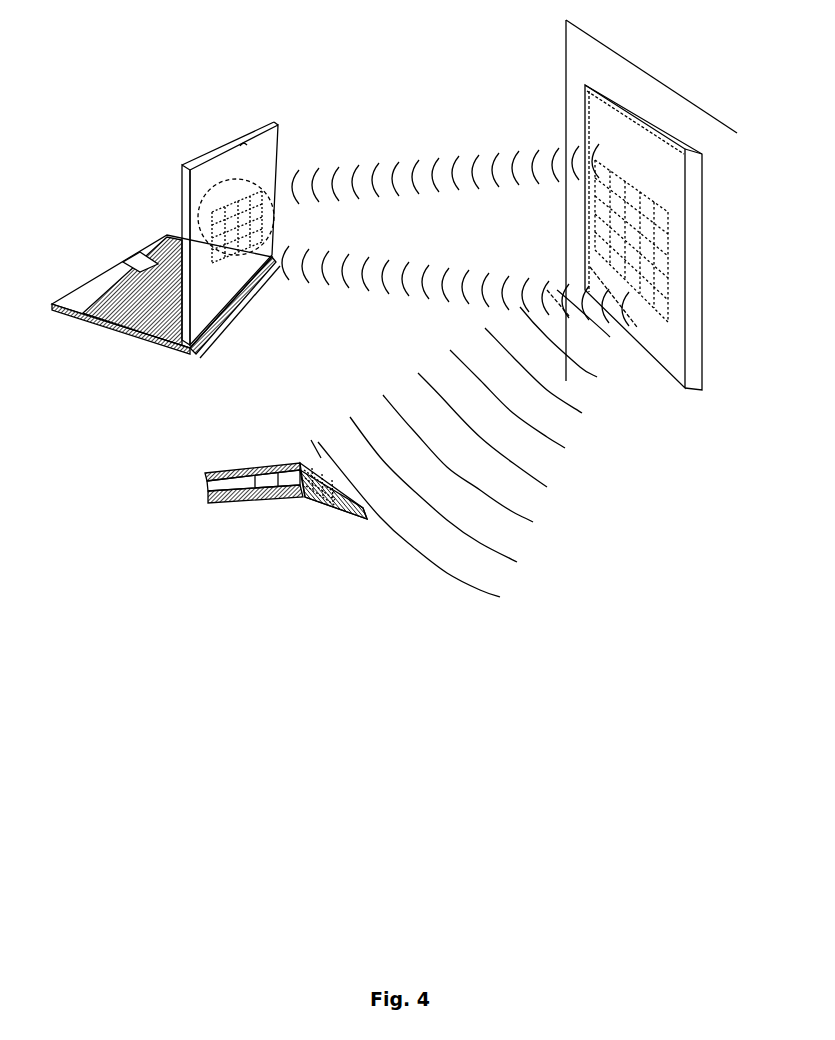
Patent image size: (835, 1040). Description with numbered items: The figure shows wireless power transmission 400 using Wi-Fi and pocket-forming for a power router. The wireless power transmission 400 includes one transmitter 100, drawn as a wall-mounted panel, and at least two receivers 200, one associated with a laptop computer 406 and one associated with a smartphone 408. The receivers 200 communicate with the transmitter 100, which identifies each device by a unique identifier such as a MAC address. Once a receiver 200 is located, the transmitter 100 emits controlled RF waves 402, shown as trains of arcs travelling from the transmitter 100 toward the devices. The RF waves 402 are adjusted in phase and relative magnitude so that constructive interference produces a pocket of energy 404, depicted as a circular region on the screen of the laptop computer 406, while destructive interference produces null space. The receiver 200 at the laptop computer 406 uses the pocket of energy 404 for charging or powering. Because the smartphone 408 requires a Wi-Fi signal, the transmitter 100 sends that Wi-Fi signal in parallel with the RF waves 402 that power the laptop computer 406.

The wireless power transmission 400 is at (158, 90).
The transmitter 100 is at (585, 85).
The RF waves 402 is at (457, 162).
The pocket of energy 404 is at (213, 182).
The laptop computer 406 is at (93, 277).
The receiver 200 is at (241, 262).
The smartphone 408 is at (204, 474).